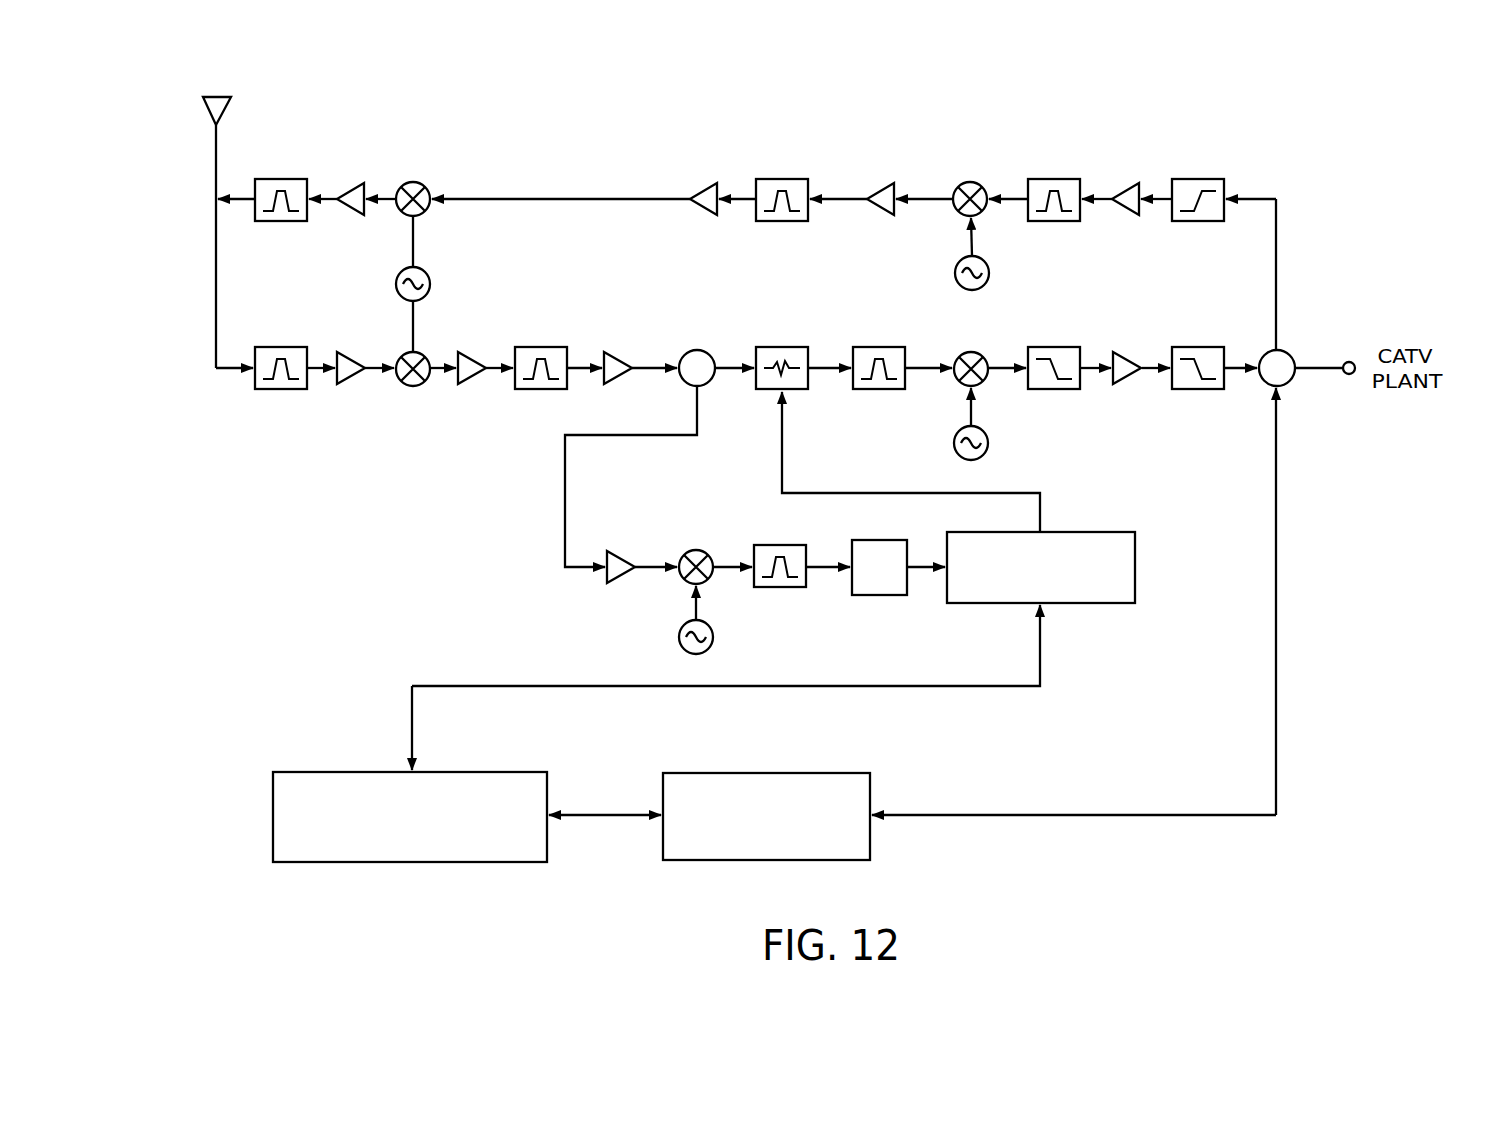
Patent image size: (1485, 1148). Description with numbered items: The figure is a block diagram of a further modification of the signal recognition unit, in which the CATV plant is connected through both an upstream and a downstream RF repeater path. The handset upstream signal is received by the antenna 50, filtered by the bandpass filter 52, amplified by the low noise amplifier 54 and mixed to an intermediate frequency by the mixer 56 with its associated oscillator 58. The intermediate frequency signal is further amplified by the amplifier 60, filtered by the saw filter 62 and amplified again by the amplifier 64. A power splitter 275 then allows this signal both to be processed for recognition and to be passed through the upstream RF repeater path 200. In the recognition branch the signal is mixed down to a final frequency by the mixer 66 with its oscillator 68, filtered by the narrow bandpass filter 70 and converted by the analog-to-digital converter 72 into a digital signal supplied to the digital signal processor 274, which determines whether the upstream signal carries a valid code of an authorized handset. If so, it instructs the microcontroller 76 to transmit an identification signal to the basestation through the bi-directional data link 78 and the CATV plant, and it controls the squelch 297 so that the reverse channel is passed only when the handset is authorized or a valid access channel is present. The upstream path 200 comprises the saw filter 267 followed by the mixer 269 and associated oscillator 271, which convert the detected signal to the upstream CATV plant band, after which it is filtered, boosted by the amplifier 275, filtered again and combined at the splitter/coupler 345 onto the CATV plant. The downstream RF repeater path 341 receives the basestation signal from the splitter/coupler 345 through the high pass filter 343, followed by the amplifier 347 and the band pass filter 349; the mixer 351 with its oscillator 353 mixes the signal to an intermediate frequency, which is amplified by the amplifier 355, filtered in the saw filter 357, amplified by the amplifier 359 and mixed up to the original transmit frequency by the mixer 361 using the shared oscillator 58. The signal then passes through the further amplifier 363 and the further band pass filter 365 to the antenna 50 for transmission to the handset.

The antenna 50 is at (236, 106).
The bandpass filter 52 is at (280, 392).
The amplifier 54 is at (348, 386).
The mixer 56 is at (413, 387).
The oscillator 58 is at (396, 289).
The amplifier 60 is at (466, 386).
The saw filter 62 is at (540, 392).
The amplifier 64 is at (615, 381).
The mixer 66 is at (693, 549).
The oscillator 68 is at (678, 637).
The narrow bandpass filter 70 is at (789, 545).
The analog-to-digital converter 72 is at (888, 540).
The microcontroller 76 is at (385, 863).
The bi-directional data link 78 is at (757, 861).
The upstream RF repeater path 200 is at (1144, 328).
The saw filter 267 is at (871, 347).
The mixer 269 is at (967, 352).
The oscillator 271 is at (953, 443).
The digital signal processor 274 is at (975, 604).
The power splitter 275 is at (688, 352).
The squelch 297 is at (779, 347).
The downstream RF repeater path 341 is at (1116, 138).
The high pass filter 343 is at (1202, 221).
The splitter/coupler 345 is at (1290, 352).
The amplifier 347 is at (1126, 216).
The band pass filter 349 is at (1056, 221).
The mixer 351 is at (965, 182).
The oscillator 353 is at (955, 277).
The amplifier 355 is at (873, 216).
The saw filter 357 is at (786, 222).
The amplifier 359 is at (699, 211).
The mixer 361 is at (411, 182).
The amplifier 363 is at (348, 216).
The band pass filter 365 is at (279, 222).